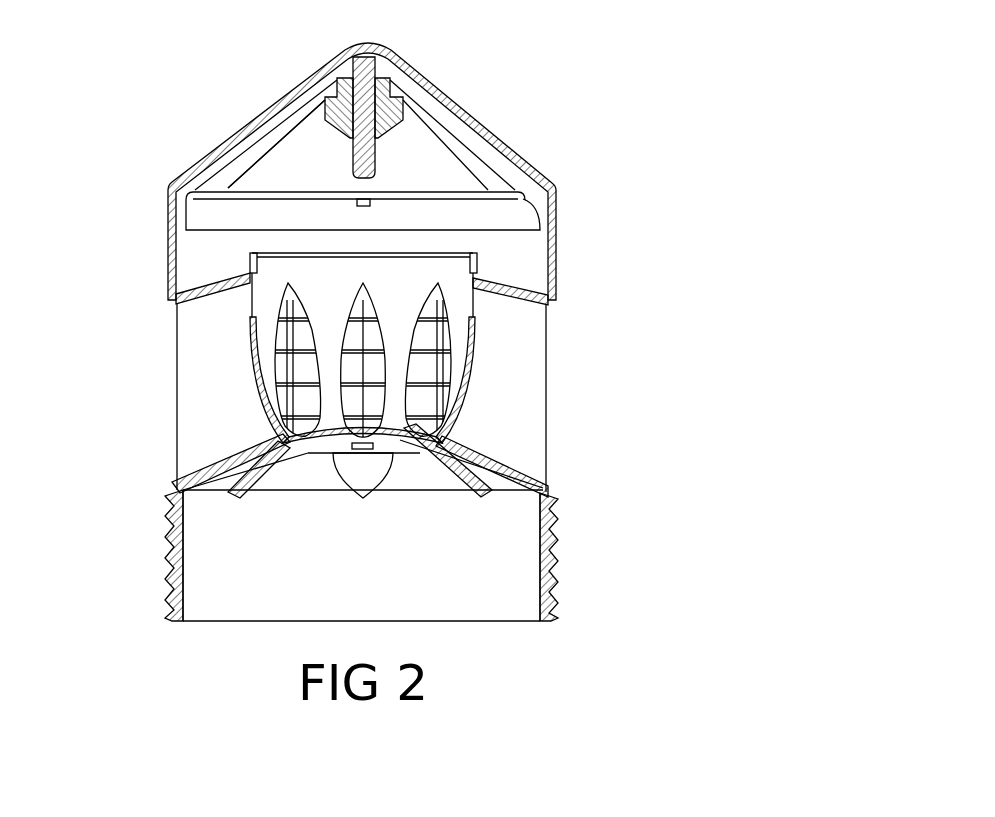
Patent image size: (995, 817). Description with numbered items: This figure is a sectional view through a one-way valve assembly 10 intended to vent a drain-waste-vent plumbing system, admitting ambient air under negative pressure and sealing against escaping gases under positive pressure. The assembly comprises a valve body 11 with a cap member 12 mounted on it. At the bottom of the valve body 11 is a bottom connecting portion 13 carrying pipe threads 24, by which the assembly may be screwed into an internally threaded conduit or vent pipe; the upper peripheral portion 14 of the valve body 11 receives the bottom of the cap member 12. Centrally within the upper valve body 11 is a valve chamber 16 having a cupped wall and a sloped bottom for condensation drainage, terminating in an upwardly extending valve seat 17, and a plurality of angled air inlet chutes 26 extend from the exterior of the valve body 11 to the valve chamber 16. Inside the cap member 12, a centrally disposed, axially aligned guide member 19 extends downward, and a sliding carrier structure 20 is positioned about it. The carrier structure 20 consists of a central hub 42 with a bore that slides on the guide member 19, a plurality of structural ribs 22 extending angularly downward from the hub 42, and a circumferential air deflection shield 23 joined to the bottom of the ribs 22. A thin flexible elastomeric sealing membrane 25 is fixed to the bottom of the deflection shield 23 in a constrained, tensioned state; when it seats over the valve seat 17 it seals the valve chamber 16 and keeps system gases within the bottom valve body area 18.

The one-way valve assembly 10 is at (547, 112).
The valve body 11 is at (557, 388).
The cap member 12 is at (457, 97).
The bottom connecting portion 13 is at (424, 573).
The upper peripheral portion 14 is at (557, 300).
The valve chamber 16 is at (472, 300).
The valve seat 17 is at (401, 291).
The bottom valve body area 18 is at (245, 595).
The guide member 19 is at (364, 95).
The sliding carrier structure 20 is at (293, 120).
The structural ribs 22 is at (263, 165).
The air deflection shield 23 is at (520, 217).
The pipe threads 24 is at (560, 525).
The flexible sealing membrane 25 is at (230, 197).
The air inlet chutes 26 is at (218, 345).
The central hub 42 is at (378, 90).